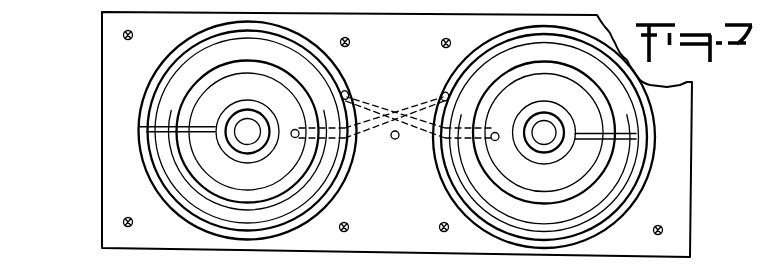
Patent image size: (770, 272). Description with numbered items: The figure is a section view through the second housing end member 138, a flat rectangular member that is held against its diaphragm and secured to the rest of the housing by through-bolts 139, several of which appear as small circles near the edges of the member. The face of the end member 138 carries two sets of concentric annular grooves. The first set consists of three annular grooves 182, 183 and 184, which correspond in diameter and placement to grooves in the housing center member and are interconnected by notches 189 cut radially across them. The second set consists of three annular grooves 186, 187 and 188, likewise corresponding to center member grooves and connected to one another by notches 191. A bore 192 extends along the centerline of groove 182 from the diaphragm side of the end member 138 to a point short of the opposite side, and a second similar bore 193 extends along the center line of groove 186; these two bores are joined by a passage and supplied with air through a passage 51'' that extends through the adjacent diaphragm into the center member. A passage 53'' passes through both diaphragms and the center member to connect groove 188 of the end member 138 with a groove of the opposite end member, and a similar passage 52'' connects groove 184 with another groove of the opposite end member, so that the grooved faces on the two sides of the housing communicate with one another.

The second housing end member 138 is at (102, 79).
The through-bolts 139 is at (132, 36).
The annular groove 182 is at (232, 156).
The annular groove 183 is at (182, 162).
The annular groove 184 is at (173, 194).
The annular groove 186 is at (550, 166).
The annular groove 187 is at (532, 209).
The annular groove 188 is at (588, 224).
The notches 189 is at (188, 127).
The notches 191 is at (598, 140).
The bore 192 is at (252, 124).
The bore 193 is at (560, 101).
The passage 51'' is at (411, 148).
The passage 52'' is at (421, 147).
The passage 53'' is at (369, 134).